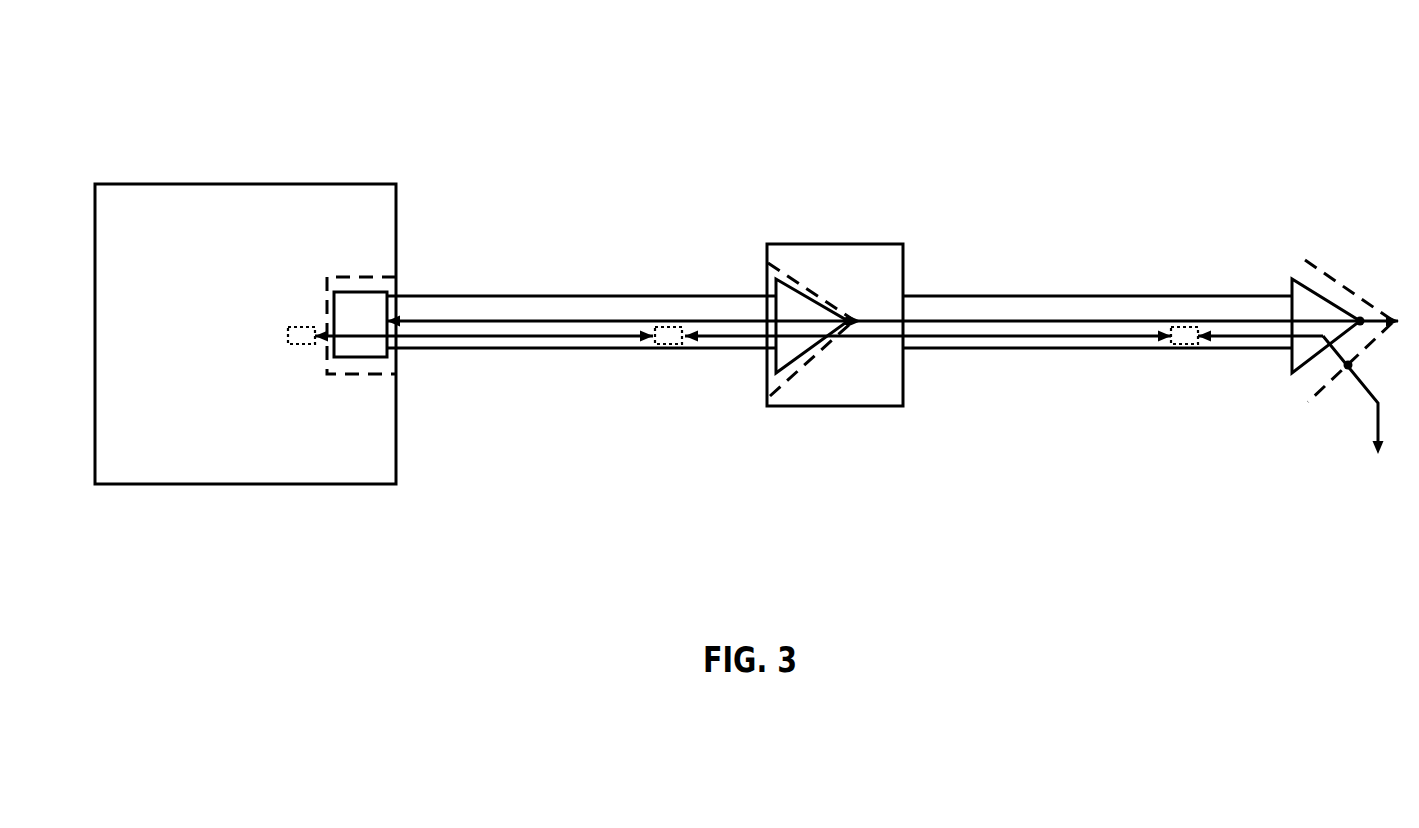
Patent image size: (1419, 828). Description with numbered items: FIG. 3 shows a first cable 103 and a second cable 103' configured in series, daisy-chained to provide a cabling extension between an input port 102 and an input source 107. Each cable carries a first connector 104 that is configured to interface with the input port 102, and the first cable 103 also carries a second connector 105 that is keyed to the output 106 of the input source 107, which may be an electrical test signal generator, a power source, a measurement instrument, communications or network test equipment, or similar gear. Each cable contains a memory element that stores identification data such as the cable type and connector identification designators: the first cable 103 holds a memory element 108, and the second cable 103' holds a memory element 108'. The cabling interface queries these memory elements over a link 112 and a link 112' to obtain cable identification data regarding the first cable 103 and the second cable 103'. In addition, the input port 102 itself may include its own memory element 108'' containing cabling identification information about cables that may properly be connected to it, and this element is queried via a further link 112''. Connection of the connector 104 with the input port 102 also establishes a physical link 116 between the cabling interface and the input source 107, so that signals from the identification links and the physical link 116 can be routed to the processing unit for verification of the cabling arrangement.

The input port 102 is at (829, 283).
The first cable 103 is at (854, 82).
The second cable 103' is at (339, 82).
The first connector 104 is at (786, 305).
The second connector 105 is at (367, 307).
The output 106 is at (357, 277).
The input source 107 is at (142, 347).
The memory element 108 is at (1156, 391).
The memory element of the second cable 108' is at (640, 391).
The detector location (source side) 108'' is at (263, 371).
The link 112 is at (1291, 394).
The second link 112' is at (928, 393).
The link to input port memory element 112'' is at (484, 375).
The physical link 116 is at (538, 318).